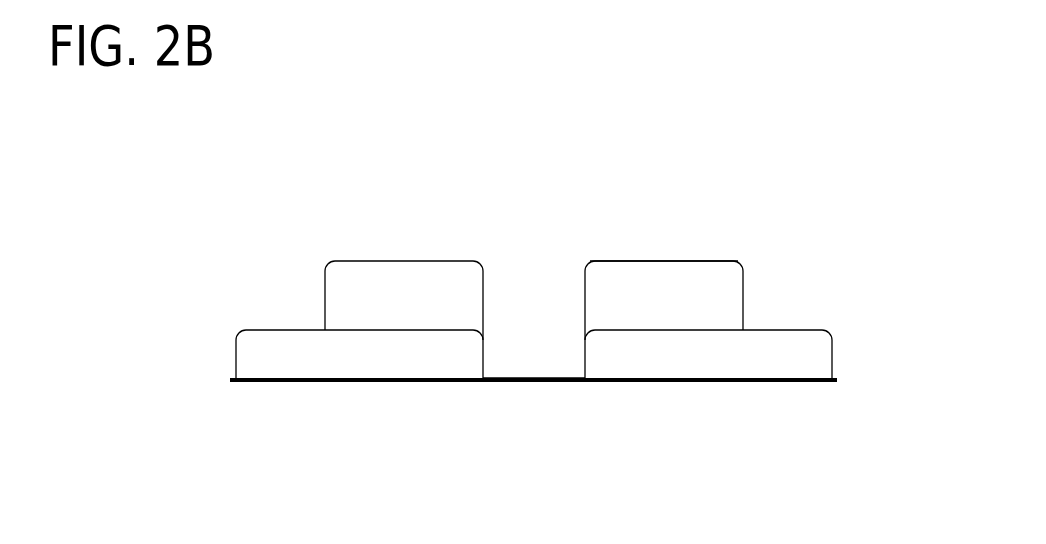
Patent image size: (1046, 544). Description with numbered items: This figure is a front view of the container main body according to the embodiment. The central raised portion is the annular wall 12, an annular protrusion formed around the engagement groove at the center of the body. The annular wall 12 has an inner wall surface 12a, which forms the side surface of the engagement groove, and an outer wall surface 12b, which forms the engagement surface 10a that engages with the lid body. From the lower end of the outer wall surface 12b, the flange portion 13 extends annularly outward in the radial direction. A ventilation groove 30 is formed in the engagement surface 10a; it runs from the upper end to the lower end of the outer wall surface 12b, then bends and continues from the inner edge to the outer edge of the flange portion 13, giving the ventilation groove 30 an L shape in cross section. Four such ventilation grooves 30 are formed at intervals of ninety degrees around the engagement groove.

The annular wall 12 is at (549, 257).
The inner wall surface 12a is at (604, 259).
The outer wall surface 12b is at (652, 287).
The engagement surface 10a is at (613, 167).
The flange portion 13 is at (772, 330).
The ventilation groove 30 is at (534, 377).